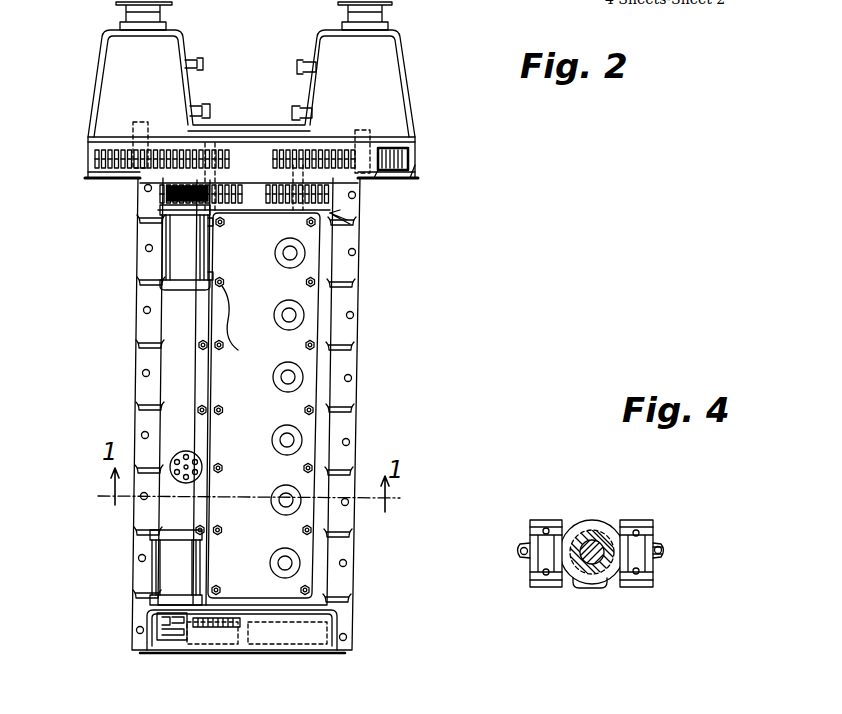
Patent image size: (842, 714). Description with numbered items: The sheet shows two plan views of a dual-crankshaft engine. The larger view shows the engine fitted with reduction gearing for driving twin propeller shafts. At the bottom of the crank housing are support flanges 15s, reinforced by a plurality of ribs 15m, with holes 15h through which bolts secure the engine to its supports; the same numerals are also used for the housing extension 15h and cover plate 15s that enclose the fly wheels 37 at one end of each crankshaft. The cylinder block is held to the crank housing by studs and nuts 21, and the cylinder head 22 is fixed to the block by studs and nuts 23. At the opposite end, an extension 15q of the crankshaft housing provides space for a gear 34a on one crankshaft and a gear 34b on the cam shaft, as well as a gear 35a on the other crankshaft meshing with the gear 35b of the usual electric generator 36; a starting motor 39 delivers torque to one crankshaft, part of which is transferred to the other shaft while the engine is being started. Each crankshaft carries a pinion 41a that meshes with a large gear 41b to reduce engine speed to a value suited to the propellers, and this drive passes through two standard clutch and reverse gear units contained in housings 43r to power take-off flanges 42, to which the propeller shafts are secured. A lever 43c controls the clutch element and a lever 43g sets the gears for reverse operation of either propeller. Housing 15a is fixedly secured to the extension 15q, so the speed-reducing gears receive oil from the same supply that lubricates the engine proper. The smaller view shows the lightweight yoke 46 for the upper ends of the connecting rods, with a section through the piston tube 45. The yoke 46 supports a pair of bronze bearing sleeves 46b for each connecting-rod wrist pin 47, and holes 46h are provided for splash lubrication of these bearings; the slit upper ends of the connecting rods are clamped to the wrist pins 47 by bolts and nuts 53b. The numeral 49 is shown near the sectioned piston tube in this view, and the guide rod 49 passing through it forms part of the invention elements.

In FIG. 2, the power take-off flange 42 is at (120, 3).
In FIG. 2, the clutch and reverse gear unit housing 43r is at (108, 78).
In FIG. 2, the reverse gear lever 43g is at (203, 62).
In FIG. 2, the clutch lever 43c is at (210, 110).
In FIG. 2, the pinion 41a is at (190, 137).
In FIG. 2, the large gear 41b is at (92, 155).
In FIG. 2, the housing 15a is at (388, 182).
In FIG. 2, the support flange / cover plate 15s is at (317, 655).
In FIG. 2, the bolt holes / housing extension 15h is at (143, 435).
In FIG. 2, the rib 15m is at (347, 297).
In FIG. 2, the crankshaft housing extension 15q is at (347, 213).
In FIG. 2, the gear 35a is at (240, 303).
In FIG. 2, the generator gear 35b is at (170, 193).
In FIG. 2, the electric generator 36 is at (166, 237).
In FIG. 2, the starting motor 39 is at (163, 570).
In FIG. 2, the crankshaft gear 34a is at (335, 223).
In FIG. 2, the camshaft gear 34b is at (332, 213).
In FIG. 2, the studs and nuts 21 is at (200, 406).
In FIG. 2, the cylinder head 22 is at (264, 405).
In FIG. 2, the studs and nuts 23 is at (222, 407).
In FIG. 2, the fly wheel 37 is at (223, 645).
In FIG. 4, the yoke 46 is at (596, 522).
In FIG. 4, the wrist pin 47 is at (546, 520).
In FIG. 4, the bronze bearing sleeve 46b is at (530, 523).
In FIG. 4, the lubrication hole 46h is at (530, 571).
In FIG. 4, the bolts and nuts 53b is at (662, 550).
In FIG. 4, the piston tube 45 is at (580, 585).
In FIG. 4, the shaft 49 is at (596, 582).